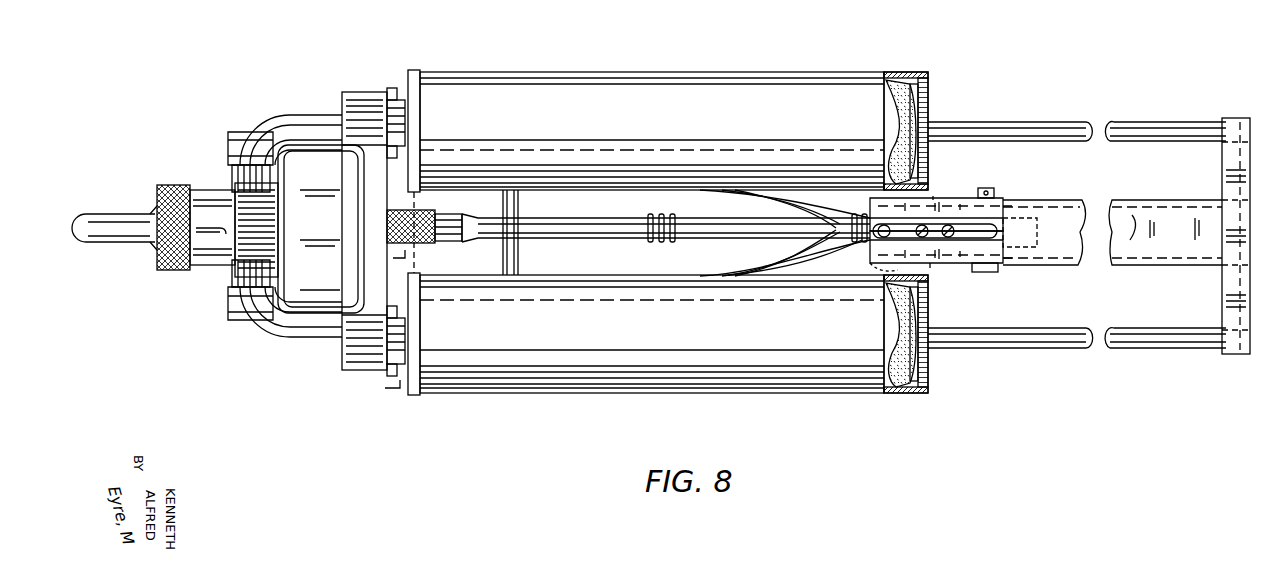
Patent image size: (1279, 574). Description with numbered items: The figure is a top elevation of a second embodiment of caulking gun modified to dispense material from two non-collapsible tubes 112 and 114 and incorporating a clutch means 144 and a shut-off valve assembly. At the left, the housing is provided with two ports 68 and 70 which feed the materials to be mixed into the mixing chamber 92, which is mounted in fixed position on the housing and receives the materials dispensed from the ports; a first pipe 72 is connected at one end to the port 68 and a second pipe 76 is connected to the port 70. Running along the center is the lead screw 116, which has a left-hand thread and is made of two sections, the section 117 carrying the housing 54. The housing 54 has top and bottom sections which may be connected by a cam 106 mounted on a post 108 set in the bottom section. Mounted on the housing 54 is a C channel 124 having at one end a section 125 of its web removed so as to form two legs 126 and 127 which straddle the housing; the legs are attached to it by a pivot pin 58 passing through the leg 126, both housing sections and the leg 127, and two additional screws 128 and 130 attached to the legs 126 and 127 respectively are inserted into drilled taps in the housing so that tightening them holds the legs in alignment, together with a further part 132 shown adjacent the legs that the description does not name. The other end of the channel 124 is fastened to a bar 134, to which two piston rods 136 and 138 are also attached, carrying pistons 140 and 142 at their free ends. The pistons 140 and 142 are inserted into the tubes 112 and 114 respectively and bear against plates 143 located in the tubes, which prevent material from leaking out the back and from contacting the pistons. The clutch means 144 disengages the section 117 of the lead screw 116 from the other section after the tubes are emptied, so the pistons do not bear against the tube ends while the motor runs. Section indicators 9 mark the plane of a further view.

The section line 9- 9 is at (98, 394).
The wind up assembly housing 54 is at (982, 280).
The pivot pin 58 is at (996, 190).
The port 68 is at (228, 256).
The port 70 is at (240, 192).
The first pipe 72 is at (302, 340).
The second pipe 76 is at (300, 116).
The mixing chamber 92 is at (166, 283).
The cam 106 is at (1022, 233).
The post 108 is at (884, 258).
The non-collapsible tube 112 is at (548, 100).
The non-collapsible tube 114 is at (572, 368).
The lead screw 116 is at (610, 244).
The lead screw section 117 is at (678, 226).
The C channel 124 is at (1052, 262).
The web section 125 is at (976, 202).
The leg 126 is at (900, 222).
The leg 127 is at (956, 262).
The screw 128 is at (870, 208).
The screw 130 is at (860, 274).
The connecting pin 132 is at (934, 196).
The bar 134 is at (1228, 168).
The piston rod 136 is at (1148, 128).
The piston rod 138 is at (1174, 346).
The piston 140 is at (928, 92).
The piston 142 is at (930, 372).
The plate 143 is at (912, 82).
The clutch means 144 is at (399, 190).